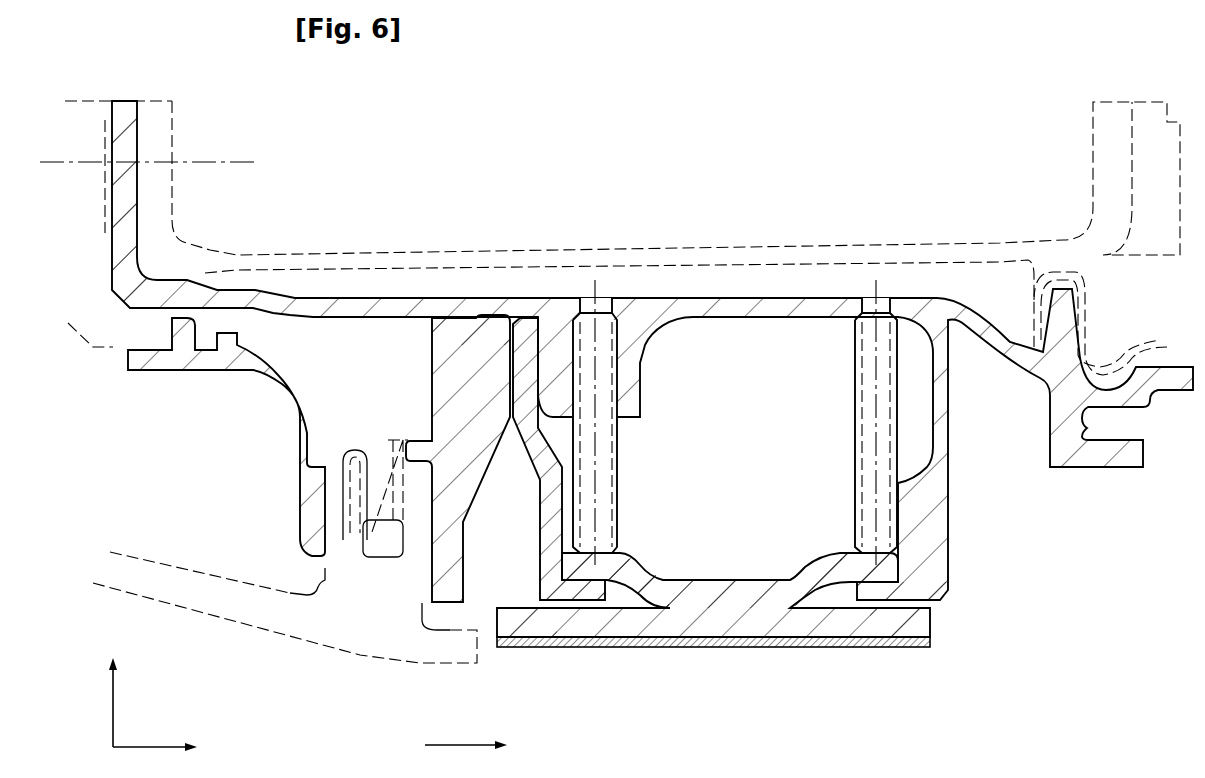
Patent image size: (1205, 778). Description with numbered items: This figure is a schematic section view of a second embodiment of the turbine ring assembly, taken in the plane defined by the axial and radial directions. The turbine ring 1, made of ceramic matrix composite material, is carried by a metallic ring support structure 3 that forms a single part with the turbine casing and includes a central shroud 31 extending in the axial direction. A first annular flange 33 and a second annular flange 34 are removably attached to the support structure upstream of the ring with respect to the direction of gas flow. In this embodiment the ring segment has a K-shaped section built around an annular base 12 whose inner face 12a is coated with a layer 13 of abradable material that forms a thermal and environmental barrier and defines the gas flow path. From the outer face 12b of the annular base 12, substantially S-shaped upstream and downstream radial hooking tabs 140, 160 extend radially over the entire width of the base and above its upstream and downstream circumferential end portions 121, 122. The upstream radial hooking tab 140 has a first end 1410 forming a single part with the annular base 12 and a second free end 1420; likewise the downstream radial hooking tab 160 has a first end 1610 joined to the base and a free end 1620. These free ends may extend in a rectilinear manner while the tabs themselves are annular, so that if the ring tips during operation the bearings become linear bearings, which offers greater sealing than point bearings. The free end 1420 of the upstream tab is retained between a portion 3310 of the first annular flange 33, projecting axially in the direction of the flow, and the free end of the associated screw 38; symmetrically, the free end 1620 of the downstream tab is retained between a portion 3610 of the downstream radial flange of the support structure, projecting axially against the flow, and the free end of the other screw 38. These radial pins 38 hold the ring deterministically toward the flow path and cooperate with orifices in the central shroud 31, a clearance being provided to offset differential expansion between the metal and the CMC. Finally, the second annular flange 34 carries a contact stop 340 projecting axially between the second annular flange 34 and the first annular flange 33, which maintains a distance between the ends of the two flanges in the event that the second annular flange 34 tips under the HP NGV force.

The turbine ring 1 is at (616, 416).
The ring support structure 3 is at (149, 129).
The central shroud 31 is at (652, 353).
The first annular flange 33 is at (544, 459).
The second annular flange 34 is at (438, 458).
The contact stop 340 is at (470, 340).
The projecting portion of first annular flange 3310 is at (560, 592).
The projecting portion of second annular radial flange 3610 is at (880, 593).
The radial pin 38 is at (610, 484).
The annular base 12 is at (710, 591).
The inner face 12a is at (802, 637).
The outer face 12b is at (747, 570).
The upstream circumferential end portion 121 is at (498, 628).
The downstream circumferential end portion 122 is at (922, 627).
The layer of abradable material 13 is at (610, 645).
The upstream radial hooking tab 140 is at (601, 561).
The first end of upstream radial hooking tab 1410 is at (675, 578).
The second free end of upstream radial hooking tab 1420 is at (578, 564).
The downstream radial hooking tab 160 is at (891, 549).
The first end of downstream radial hooking tab 1610 is at (795, 580).
The second free end of downstream radial hooking tab 1620 is at (895, 560).